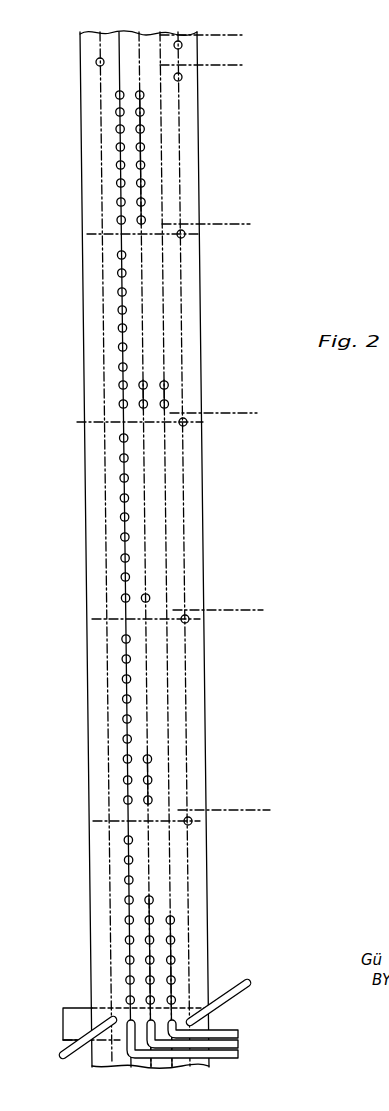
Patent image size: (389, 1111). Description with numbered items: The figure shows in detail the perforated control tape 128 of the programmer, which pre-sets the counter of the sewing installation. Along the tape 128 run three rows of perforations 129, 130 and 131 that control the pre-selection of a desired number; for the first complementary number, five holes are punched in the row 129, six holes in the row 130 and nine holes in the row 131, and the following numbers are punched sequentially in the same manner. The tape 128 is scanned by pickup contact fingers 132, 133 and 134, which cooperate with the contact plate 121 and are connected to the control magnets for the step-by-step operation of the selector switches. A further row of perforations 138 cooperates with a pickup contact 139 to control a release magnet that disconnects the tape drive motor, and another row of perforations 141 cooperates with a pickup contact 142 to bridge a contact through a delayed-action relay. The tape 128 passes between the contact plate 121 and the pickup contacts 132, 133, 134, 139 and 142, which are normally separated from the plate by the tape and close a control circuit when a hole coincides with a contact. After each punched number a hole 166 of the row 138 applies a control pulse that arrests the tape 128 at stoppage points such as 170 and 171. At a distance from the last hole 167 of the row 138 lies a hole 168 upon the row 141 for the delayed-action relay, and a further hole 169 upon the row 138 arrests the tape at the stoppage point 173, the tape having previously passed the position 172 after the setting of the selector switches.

The contact plate 121 is at (85, 1017).
The perforated tape 128 is at (102, 781).
The row of perforations 129 is at (165, 480).
The row of perforations 130 is at (145, 530).
The row of perforations 131 is at (125, 589).
The pickup contact finger 132 is at (238, 1030).
The pickup contact finger 133 is at (238, 1042).
The pickup contact finger 134 is at (238, 1053).
The row of perforations 138 is at (184, 457).
The pickup contact 139 is at (243, 985).
The row of perforations 141 is at (107, 683).
The pickup contact 142 is at (67, 1052).
The hole 166 is at (185, 235).
The last hole 167 is at (182, 77).
The hole 168 is at (96, 61).
The hole 169 is at (182, 45).
The stoppage point 170 is at (252, 808).
The stoppage point 171 is at (245, 610).
The position 172 is at (240, 63).
The stoppage point 173 is at (240, 35).